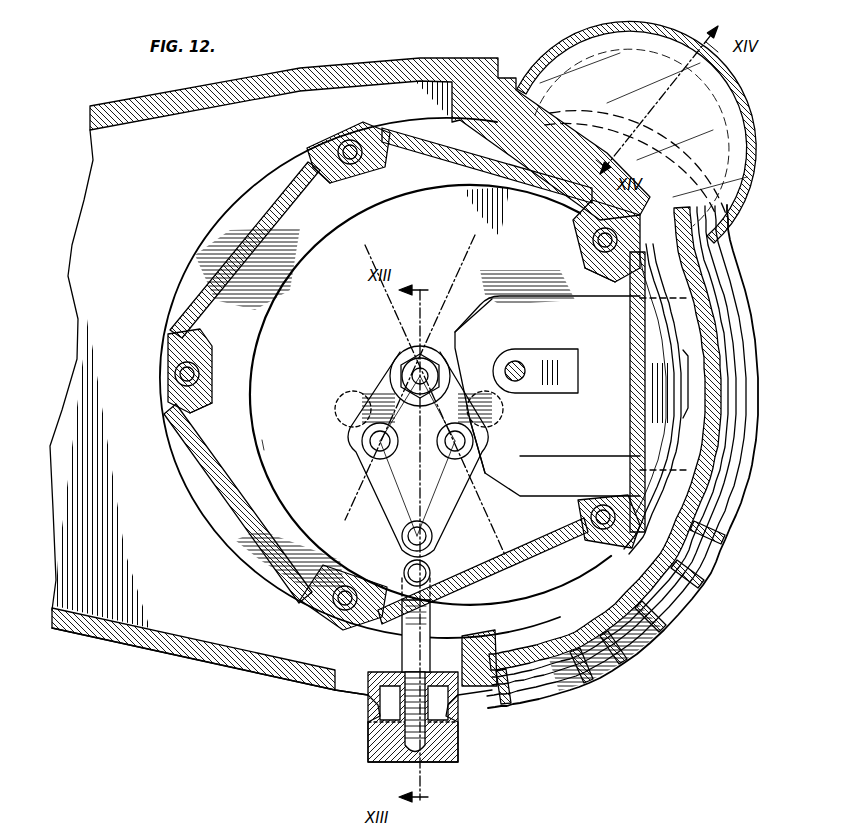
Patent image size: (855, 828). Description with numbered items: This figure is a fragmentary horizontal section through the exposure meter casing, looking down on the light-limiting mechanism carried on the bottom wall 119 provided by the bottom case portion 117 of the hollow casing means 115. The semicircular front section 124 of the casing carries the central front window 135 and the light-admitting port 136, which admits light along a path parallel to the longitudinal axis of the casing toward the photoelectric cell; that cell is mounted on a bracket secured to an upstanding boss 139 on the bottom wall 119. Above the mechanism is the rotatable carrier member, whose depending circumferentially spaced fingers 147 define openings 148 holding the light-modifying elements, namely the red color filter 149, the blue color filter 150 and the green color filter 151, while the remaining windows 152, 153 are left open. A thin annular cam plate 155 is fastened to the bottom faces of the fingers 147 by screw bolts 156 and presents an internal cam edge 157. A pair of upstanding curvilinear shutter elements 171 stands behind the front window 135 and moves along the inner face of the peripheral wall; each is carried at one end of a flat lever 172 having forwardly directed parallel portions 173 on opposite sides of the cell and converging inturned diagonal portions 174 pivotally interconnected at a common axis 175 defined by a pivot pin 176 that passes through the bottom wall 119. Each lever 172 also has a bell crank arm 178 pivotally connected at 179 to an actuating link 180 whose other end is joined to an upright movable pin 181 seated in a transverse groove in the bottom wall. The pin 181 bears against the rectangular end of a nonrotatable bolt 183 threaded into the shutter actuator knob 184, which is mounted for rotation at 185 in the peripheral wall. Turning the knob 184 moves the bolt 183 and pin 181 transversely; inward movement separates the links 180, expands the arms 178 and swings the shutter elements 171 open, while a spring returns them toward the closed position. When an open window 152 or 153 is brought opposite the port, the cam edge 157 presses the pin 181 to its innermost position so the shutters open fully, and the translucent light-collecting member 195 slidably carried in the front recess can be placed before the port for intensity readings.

The hollow casing means 115 is at (173, 665).
The bottom case portion 117 is at (240, 672).
The bottom wall 119 is at (96, 181).
The semicircular front section 124 is at (737, 267).
The central front window 135 is at (722, 388).
The light-admitting port 136 is at (703, 480).
The upstanding boss 139 is at (532, 393).
The arcuate segments or fingers 147 is at (323, 140).
The openings 148 is at (316, 175).
The red color filter 149 is at (417, 152).
The blue color filter 150 is at (632, 320).
The green color filter 151 is at (477, 587).
The open window 152 is at (200, 456).
The open window 153 is at (197, 302).
The cam plate 155 is at (238, 370).
The screw bolts 156 is at (350, 147).
The internal cam edge 157 is at (340, 440).
The curvilinear shutter elements 171 is at (683, 319).
The lever 172 is at (441, 327).
The forwardly directed parallel portions 173 is at (568, 459).
The converging inturned diagonal portions 174 is at (478, 344).
The common axis 175 is at (412, 376).
The pivot pin 176 is at (438, 366).
The bell crank arm 178 is at (372, 462).
The pivotal connection 179 is at (478, 437).
The actuating link 180 is at (435, 528).
The upright movable pin 181 is at (404, 572).
The nonrotatable bolt 183 is at (410, 657).
The shutter actuator knob 184 is at (454, 752).
The rotatable mounting 185 is at (395, 706).
The light-collecting member 195 is at (738, 88).